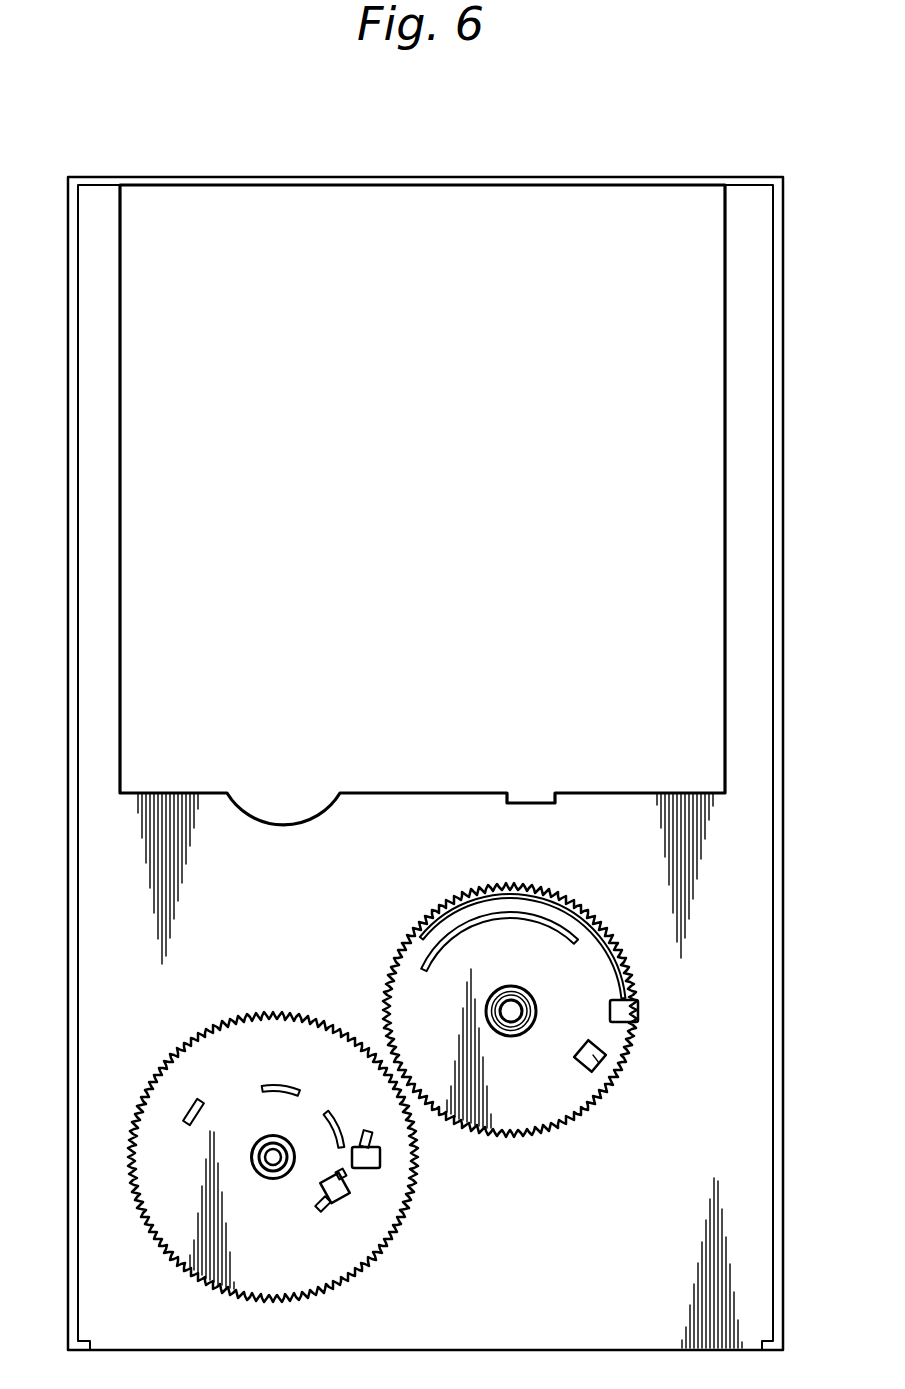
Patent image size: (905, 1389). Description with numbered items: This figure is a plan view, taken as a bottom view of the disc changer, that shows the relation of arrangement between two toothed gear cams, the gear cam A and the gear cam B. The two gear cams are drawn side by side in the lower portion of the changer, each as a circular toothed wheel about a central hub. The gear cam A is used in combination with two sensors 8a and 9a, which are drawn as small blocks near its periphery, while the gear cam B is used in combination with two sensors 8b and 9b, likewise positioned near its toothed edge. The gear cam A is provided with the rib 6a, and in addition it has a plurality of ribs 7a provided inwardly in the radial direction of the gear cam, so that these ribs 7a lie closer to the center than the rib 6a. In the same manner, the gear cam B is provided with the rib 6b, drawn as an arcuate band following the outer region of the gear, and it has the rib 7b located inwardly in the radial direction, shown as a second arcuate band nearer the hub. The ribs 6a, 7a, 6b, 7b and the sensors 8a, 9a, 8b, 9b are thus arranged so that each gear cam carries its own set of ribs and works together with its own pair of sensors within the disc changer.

The gear cam A is at (416, 1235).
The gear cam B is at (589, 1131).
The rib 6a is at (188, 1128).
The ribs 7a is at (278, 1083).
The sensor 8a is at (382, 1156).
The sensor 9a is at (349, 1198).
The rib 6b is at (620, 978).
The rib 7b is at (507, 918).
The sensor 8b is at (636, 1008).
The sensor 9b is at (617, 1075).